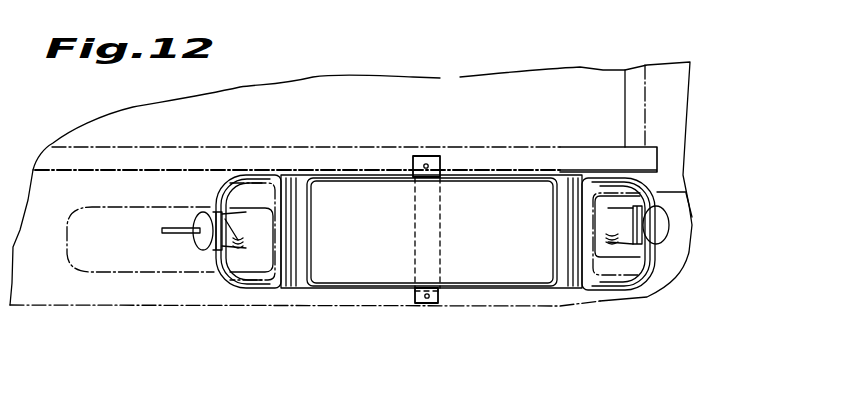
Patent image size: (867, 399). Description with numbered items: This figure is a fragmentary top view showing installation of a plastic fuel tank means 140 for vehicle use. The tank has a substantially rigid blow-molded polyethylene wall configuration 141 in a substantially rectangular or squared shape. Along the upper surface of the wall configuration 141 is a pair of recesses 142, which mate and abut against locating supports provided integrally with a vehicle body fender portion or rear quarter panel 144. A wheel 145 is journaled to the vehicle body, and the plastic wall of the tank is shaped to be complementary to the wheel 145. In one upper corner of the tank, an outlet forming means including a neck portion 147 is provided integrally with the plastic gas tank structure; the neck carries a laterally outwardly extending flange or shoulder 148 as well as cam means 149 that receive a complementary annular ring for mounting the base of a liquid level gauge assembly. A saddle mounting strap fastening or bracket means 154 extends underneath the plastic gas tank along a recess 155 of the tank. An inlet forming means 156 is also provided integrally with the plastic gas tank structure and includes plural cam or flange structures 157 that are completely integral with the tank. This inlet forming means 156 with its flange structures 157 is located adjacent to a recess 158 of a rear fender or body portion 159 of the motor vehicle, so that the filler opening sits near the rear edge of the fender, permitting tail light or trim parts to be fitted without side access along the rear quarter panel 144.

The plastic fuel tank means 140 is at (338, 289).
The wall configuration 141 is at (477, 183).
The recesses 142 is at (298, 243).
The rear quarter panel 144 is at (527, 308).
The wheel 145 is at (100, 274).
The neck portion 147 is at (223, 222).
The flange or shoulder 148 is at (218, 228).
The cam means 149 is at (237, 246).
The saddle mounting strap fastening or bracket means 154 is at (426, 163).
The recess 155 is at (412, 240).
The inlet forming means 156 is at (623, 222).
The cam or flange structures 157 is at (660, 232).
The recess 158 is at (665, 188).
The rear fender or body portion 159 is at (692, 213).